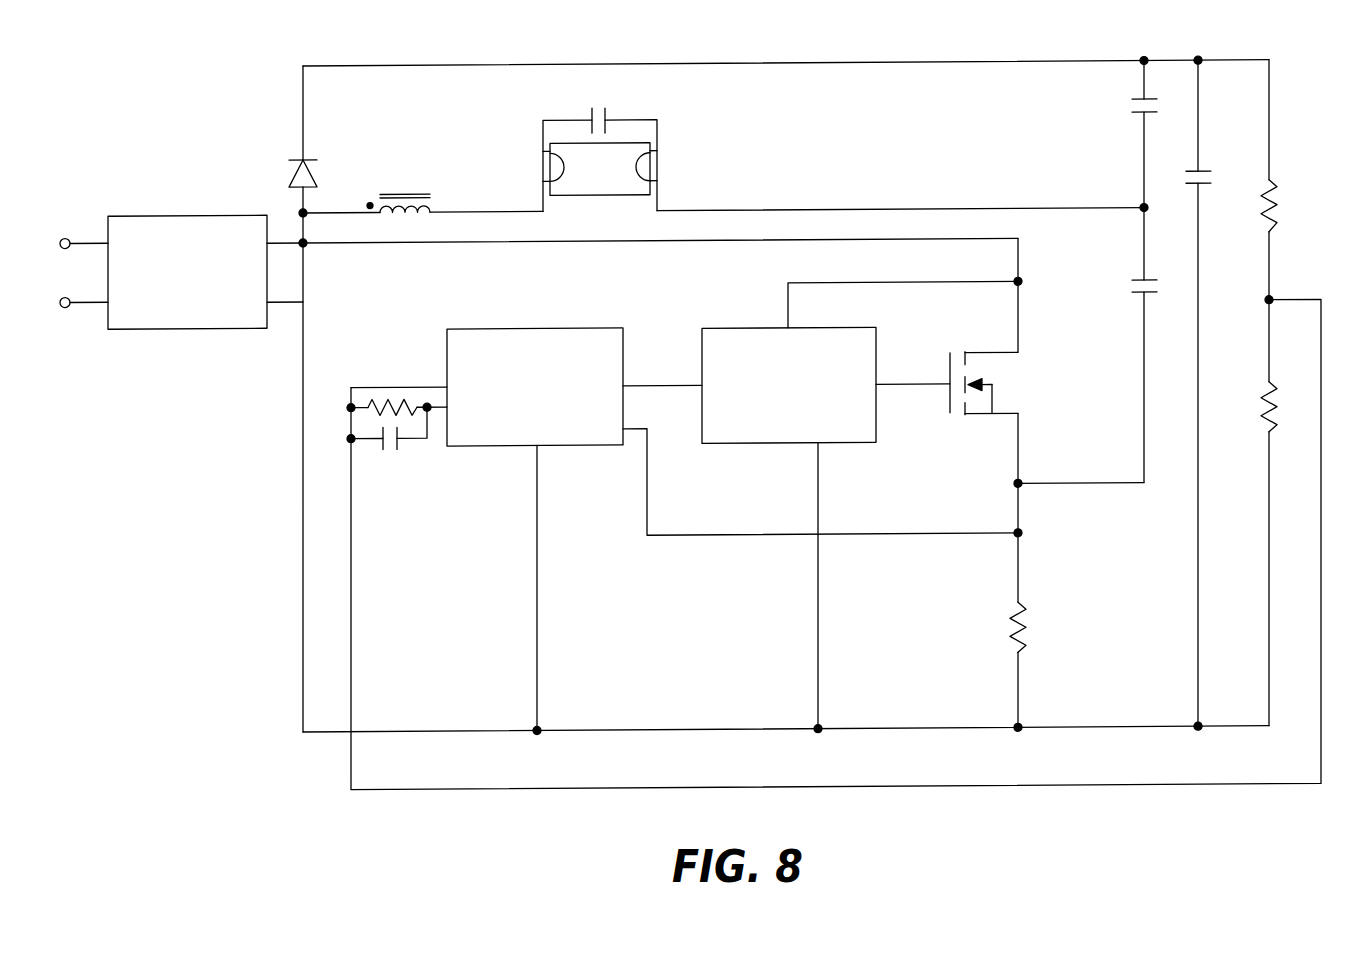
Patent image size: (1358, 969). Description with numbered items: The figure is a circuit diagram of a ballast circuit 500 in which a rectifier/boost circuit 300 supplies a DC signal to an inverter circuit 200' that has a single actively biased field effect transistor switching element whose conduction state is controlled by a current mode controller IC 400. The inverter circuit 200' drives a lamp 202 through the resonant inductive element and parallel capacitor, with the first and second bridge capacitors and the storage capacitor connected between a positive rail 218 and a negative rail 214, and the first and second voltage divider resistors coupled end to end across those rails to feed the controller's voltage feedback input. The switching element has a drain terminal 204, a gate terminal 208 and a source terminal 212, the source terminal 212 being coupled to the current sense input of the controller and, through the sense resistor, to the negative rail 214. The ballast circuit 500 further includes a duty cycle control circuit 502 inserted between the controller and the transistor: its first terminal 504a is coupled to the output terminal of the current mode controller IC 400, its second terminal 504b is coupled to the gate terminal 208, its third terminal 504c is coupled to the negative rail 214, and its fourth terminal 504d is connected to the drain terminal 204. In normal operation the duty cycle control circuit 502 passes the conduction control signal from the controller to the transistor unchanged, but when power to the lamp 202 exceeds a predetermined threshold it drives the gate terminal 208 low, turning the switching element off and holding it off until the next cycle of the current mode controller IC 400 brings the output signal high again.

The ballast circuit 500 is at (235, 96).
The rectifier/boost circuit 300 is at (247, 215).
The positive rail 218 is at (393, 66).
The inverter circuit 200' is at (877, 393).
The lamp 202 is at (618, 184).
The current mode controller IC 400 is at (517, 330).
The duty cycle control circuit 502 is at (755, 331).
The first terminal 504a is at (670, 389).
The second terminal 504b is at (897, 389).
The third terminal 504c is at (819, 508).
The fourth terminal 504d is at (788, 316).
The drain terminal 204 is at (1020, 335).
The gate terminal 208 is at (923, 390).
The source terminal 212 is at (1020, 468).
The negative rail 214 is at (392, 732).